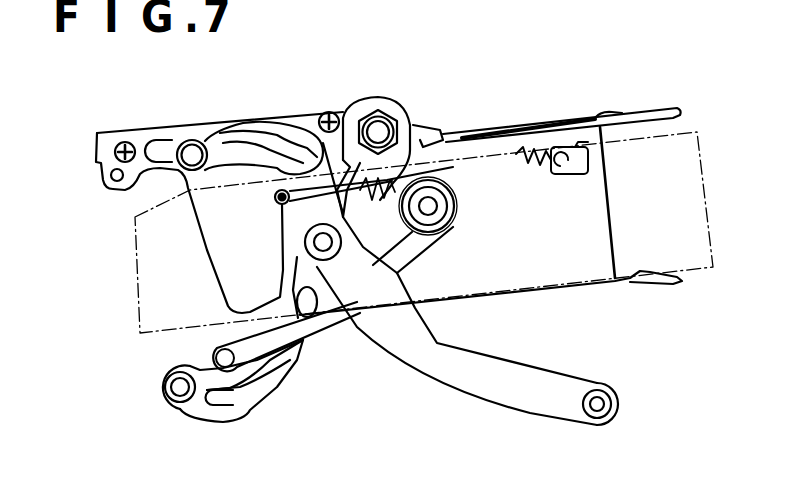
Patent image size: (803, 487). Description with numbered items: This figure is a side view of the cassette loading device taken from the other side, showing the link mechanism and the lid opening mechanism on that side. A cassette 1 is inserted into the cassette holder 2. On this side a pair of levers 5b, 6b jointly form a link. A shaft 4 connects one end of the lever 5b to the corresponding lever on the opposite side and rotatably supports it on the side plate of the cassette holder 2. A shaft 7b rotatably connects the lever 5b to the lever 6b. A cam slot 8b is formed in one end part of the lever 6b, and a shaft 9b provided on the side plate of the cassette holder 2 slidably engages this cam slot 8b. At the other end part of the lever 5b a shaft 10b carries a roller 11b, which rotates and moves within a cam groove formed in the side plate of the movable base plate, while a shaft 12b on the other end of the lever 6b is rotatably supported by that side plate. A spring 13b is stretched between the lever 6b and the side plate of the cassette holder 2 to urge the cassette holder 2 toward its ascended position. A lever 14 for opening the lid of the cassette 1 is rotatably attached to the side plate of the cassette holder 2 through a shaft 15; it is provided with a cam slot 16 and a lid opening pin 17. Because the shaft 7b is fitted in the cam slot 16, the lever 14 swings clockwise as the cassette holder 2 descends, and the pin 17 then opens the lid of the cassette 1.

The cassette 1 is at (690, 247).
The cassette holder 2 is at (590, 193).
The shaft 4 is at (380, 125).
The lever 5b is at (273, 387).
The lever 6b is at (497, 392).
The shaft 7b is at (357, 262).
The cam slot 8b is at (258, 137).
The shaft 9b is at (193, 150).
The shaft 10b is at (180, 392).
The roller 11b is at (160, 383).
The shaft 12b is at (600, 405).
The spring 13b is at (547, 153).
The lever 14 is at (398, 245).
The shaft 15 is at (432, 200).
The cam slot 16 is at (317, 270).
The lid opening pin 17 is at (227, 366).